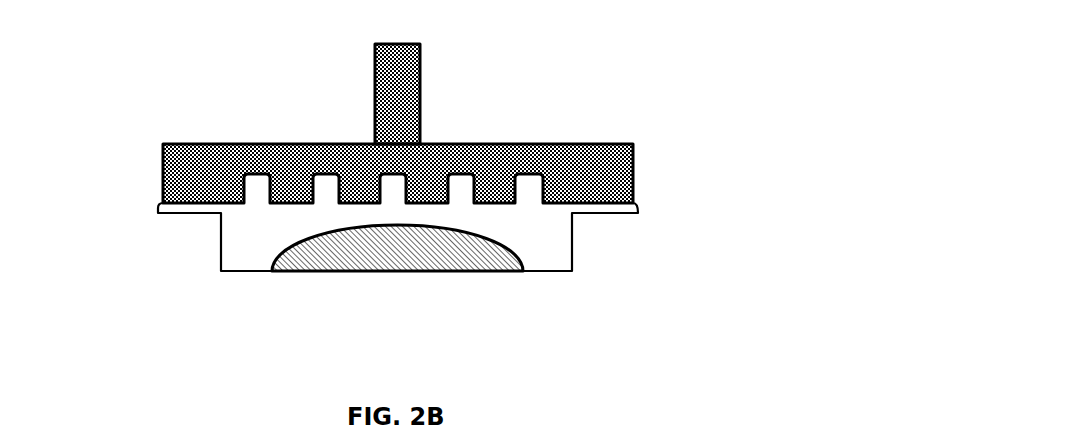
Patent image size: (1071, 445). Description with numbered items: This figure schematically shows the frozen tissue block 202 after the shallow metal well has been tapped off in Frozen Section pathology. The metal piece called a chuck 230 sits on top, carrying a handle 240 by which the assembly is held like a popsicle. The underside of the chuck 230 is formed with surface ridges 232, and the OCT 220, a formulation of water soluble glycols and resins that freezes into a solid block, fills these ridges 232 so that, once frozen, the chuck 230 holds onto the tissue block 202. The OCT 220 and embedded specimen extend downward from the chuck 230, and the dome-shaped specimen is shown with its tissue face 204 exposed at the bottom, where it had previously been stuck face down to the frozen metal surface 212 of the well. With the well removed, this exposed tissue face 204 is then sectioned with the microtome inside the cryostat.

The tissue block 202 is at (259, 255).
The tissue face 204 is at (442, 275).
The frozen metal surface 212 is at (550, 268).
The OCT fluid 220 is at (538, 225).
The chuck 230 is at (215, 148).
The surface ridges 232 is at (527, 182).
The handle 240 is at (375, 44).